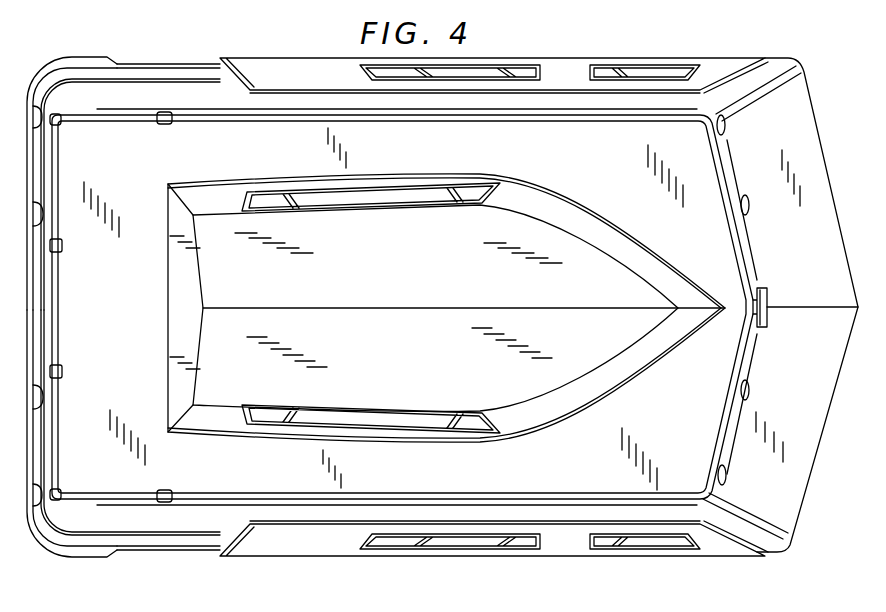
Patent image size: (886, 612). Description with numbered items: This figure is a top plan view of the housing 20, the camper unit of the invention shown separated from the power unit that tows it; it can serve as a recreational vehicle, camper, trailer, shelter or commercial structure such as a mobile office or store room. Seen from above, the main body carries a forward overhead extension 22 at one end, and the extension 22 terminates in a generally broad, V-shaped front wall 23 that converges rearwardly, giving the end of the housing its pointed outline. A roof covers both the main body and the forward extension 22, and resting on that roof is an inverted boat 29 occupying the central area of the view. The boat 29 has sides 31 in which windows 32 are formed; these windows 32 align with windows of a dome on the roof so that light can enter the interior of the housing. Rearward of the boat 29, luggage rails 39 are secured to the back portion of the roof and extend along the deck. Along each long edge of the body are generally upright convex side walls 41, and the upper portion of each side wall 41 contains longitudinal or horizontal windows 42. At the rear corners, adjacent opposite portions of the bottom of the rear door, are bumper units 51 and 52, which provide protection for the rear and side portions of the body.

The housing 20 is at (773, 49).
The forward overhead extension 22 is at (700, 405).
The front wall 23 is at (812, 203).
The inverted boat 29 is at (393, 286).
The sides 31 is at (195, 200).
The windows 32 is at (410, 197).
The luggage rails 39 is at (58, 163).
The side walls 41 is at (172, 88).
The windows 42 is at (467, 543).
The bumper unit 51 is at (42, 78).
The bumper unit 52 is at (50, 543).